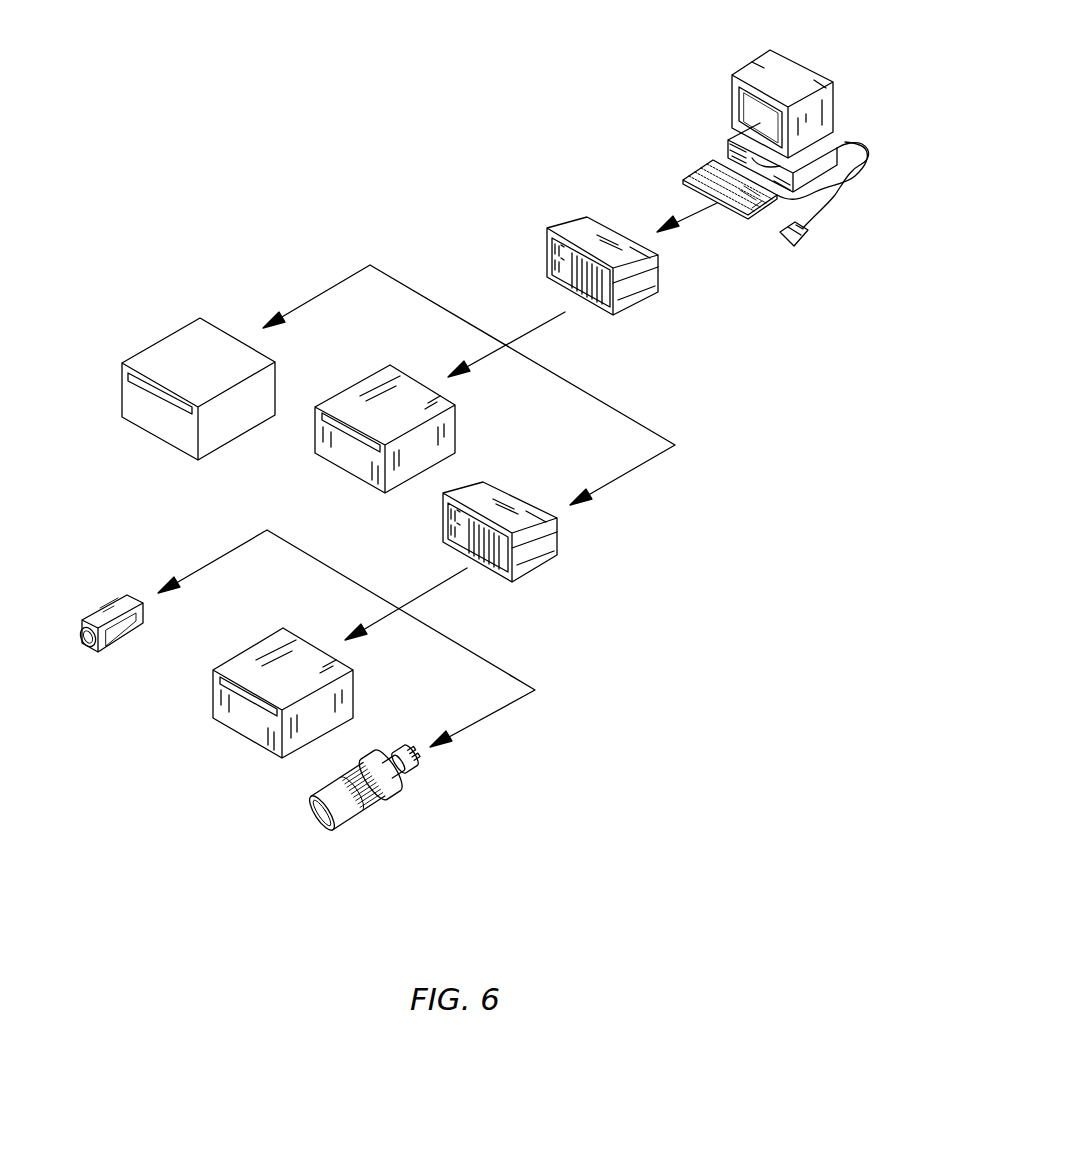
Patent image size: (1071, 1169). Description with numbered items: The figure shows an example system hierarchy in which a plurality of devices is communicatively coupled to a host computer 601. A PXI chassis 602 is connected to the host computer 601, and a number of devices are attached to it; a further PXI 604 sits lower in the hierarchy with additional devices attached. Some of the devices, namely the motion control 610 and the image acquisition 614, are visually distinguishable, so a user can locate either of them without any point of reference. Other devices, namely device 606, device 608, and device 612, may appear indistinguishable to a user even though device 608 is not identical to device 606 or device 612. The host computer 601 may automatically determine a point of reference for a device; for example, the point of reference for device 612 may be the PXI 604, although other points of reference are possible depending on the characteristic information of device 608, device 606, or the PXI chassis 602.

The host computer 601 is at (783, 53).
The PXI chassis 602 is at (590, 215).
The PXI 604 is at (485, 483).
The device 606 is at (390, 365).
The device 608 is at (200, 318).
The motion control 610 is at (403, 787).
The device 612 is at (283, 628).
The image acquisition 614 is at (98, 652).